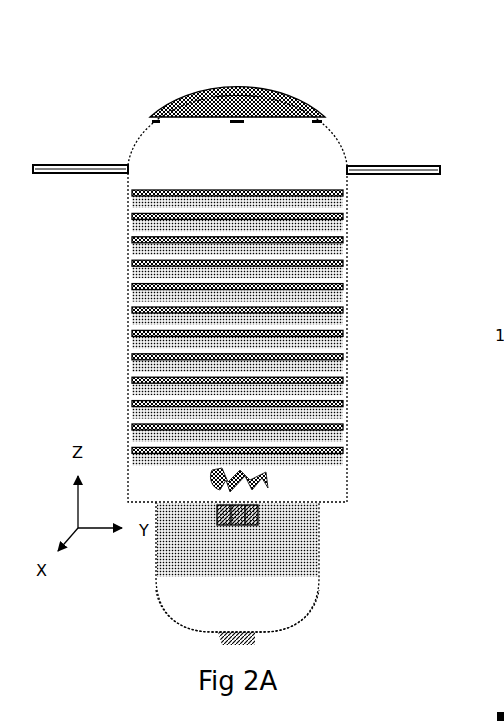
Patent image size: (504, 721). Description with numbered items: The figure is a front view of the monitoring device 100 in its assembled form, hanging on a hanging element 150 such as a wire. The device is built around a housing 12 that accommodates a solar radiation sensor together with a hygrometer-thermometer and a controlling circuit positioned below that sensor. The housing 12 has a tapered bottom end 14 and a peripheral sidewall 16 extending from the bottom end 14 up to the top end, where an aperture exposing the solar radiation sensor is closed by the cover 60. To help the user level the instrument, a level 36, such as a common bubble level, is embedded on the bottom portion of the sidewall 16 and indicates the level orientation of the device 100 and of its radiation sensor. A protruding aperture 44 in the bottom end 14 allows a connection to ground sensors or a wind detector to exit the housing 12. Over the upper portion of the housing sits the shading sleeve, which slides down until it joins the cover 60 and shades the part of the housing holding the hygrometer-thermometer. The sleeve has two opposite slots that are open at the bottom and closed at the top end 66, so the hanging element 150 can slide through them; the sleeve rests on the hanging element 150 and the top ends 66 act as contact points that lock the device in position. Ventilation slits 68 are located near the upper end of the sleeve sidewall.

The monitoring device 100 is at (378, 38).
The housing 12 is at (345, 579).
The tapered bottom end 14 is at (186, 627).
The peripheral sidewall 16 is at (162, 559).
The level 36 is at (260, 514).
The protruding aperture 44 is at (245, 640).
The cover 60 is at (212, 96).
The closed top end of slot 66 is at (128, 165).
The ventilation slits 68 is at (323, 120).
The hanging element 150 is at (92, 174).